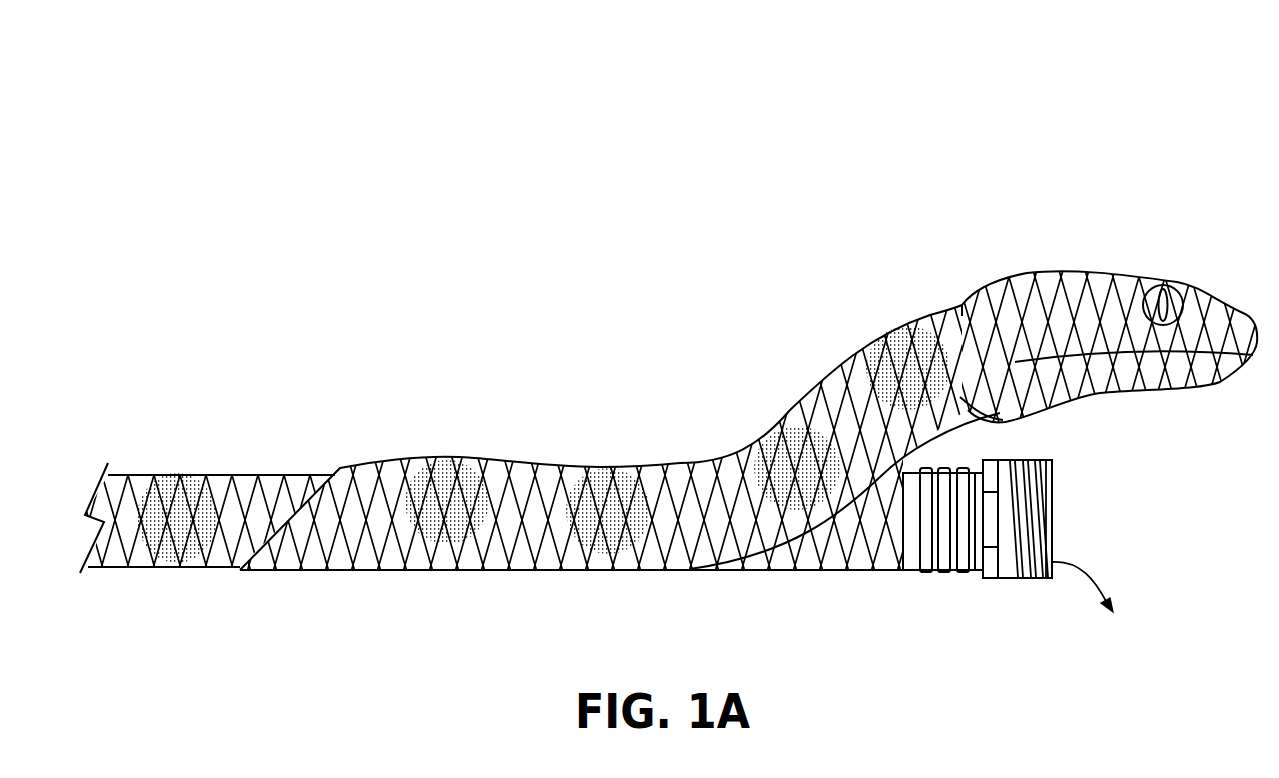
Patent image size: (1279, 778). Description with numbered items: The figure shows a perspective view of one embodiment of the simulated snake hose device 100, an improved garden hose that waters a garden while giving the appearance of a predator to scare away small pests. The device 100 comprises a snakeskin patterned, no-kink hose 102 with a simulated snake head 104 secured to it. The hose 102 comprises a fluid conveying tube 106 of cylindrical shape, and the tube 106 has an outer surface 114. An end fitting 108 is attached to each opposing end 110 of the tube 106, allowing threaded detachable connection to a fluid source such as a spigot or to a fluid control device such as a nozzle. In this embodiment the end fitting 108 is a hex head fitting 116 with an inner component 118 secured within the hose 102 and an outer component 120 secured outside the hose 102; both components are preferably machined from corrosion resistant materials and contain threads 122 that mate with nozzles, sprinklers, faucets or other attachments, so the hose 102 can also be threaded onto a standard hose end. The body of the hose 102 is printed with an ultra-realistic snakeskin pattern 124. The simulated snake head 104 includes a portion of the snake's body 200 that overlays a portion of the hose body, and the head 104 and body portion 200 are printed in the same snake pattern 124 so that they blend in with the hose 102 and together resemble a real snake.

The simulated snake hose device 100 is at (985, 168).
The hose 102 is at (853, 543).
The simulated snake head 104 is at (1098, 297).
The fluid conveying tube 106 is at (254, 470).
The end fitting 108 is at (998, 454).
The opposing end 110 is at (898, 568).
The outer surface 114 is at (822, 556).
The hex head fitting 116 is at (1027, 508).
The inner component 118 is at (1063, 485).
The outer component 120 is at (951, 556).
The threads 122 is at (949, 472).
The snakeskin pattern 124 is at (128, 487).
The body portion 200 is at (679, 541).